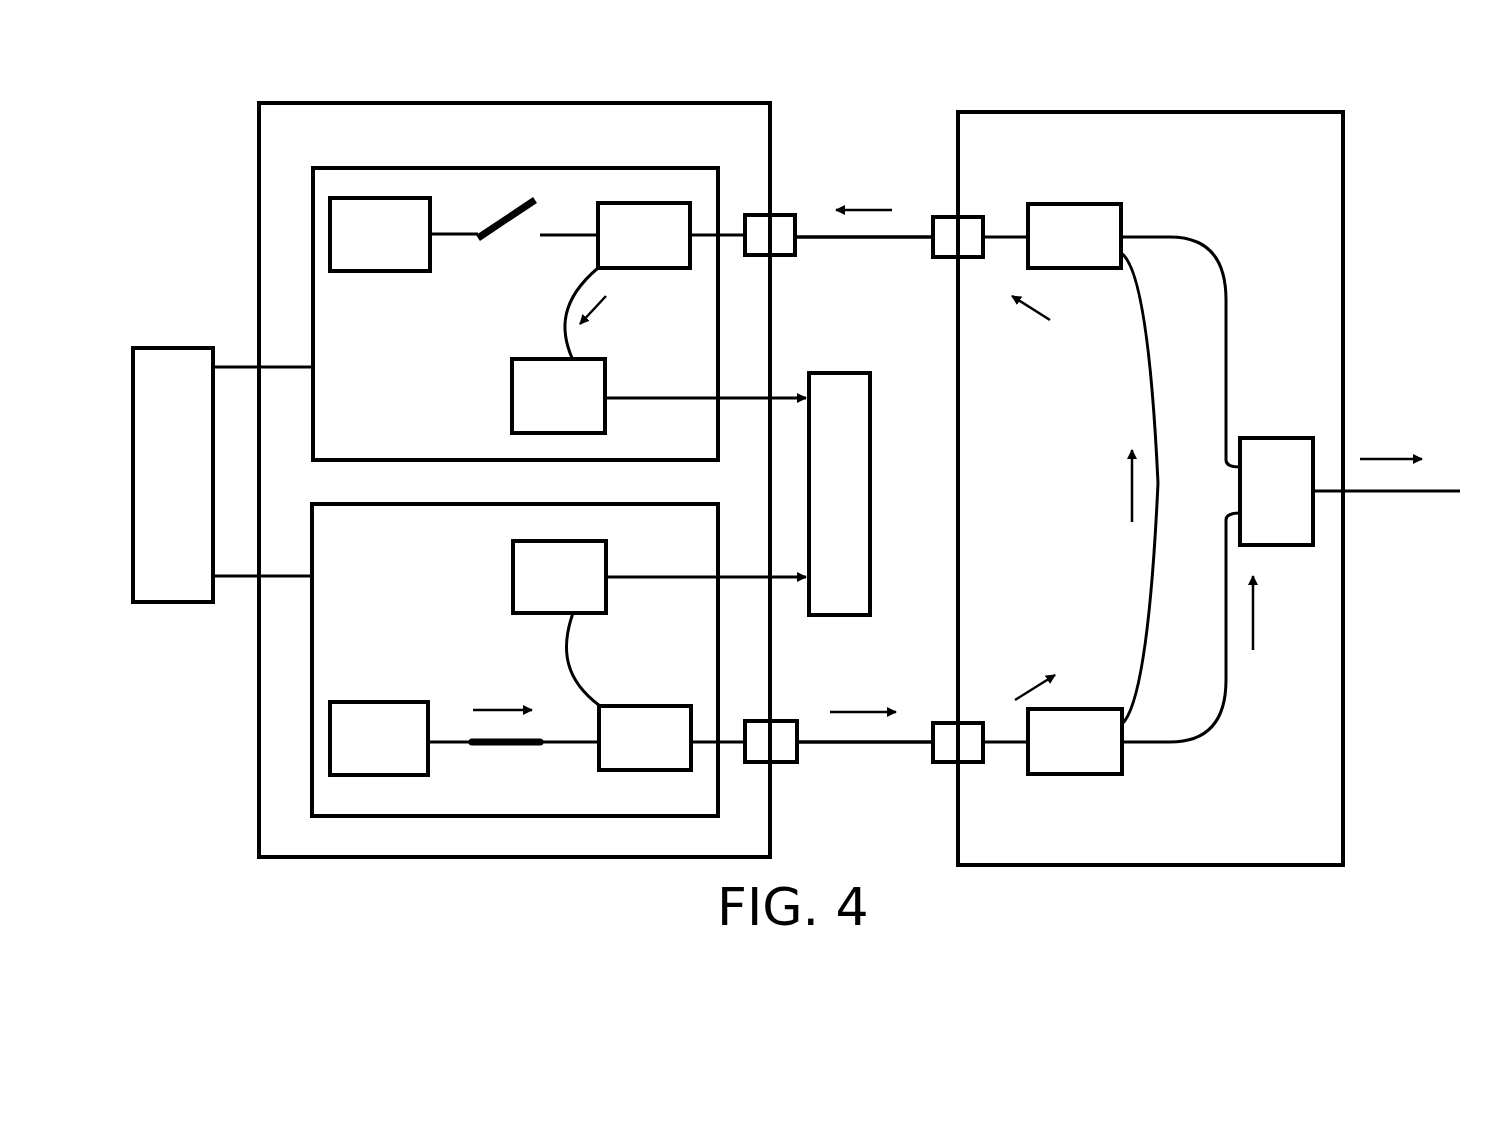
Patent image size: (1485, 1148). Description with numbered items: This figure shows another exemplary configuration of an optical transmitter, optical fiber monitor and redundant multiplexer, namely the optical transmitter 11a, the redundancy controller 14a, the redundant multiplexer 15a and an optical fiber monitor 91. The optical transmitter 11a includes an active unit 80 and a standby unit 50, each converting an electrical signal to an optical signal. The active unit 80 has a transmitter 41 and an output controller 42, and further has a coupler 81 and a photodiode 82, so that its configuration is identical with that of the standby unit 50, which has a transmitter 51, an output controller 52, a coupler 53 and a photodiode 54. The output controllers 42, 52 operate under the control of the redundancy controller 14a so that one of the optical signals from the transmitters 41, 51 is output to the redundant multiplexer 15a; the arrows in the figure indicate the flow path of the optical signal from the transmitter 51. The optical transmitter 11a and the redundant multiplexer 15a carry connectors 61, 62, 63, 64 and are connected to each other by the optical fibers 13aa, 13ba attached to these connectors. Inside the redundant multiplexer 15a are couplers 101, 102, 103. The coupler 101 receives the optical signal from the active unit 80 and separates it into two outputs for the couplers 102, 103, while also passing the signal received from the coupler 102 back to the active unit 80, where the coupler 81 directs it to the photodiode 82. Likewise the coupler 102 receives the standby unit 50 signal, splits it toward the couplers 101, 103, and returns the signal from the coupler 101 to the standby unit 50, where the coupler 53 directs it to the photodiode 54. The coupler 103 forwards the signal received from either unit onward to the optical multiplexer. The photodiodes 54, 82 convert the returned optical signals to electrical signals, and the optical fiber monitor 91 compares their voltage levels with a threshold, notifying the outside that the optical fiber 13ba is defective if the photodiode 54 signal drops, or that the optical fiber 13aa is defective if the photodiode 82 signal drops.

The optical transmitter 11a is at (324, 102).
The redundancy controller 14a is at (170, 347).
The redundant multiplexer 15a is at (1035, 112).
The active unit 80 is at (378, 167).
The transmitter 41 is at (345, 272).
The output controller 42 is at (500, 233).
The coupler 81 is at (645, 270).
The photodiode 82 is at (525, 358).
The optical fiber monitor 91 is at (818, 372).
The connector 61 is at (784, 214).
The connector 62 is at (784, 720).
The connector 63 is at (943, 216).
The connector 64 is at (943, 722).
The optical fiber 13aa is at (835, 238).
The optical fiber 13ba is at (828, 744).
The coupler 101 is at (1048, 205).
The coupler 102 is at (1055, 777).
The coupler 103 is at (1273, 437).
The standby unit 50 is at (366, 504).
The transmitter 51 is at (345, 702).
The output controller 52 is at (490, 746).
The coupler 53 is at (650, 706).
The photodiode 54 is at (528, 614).